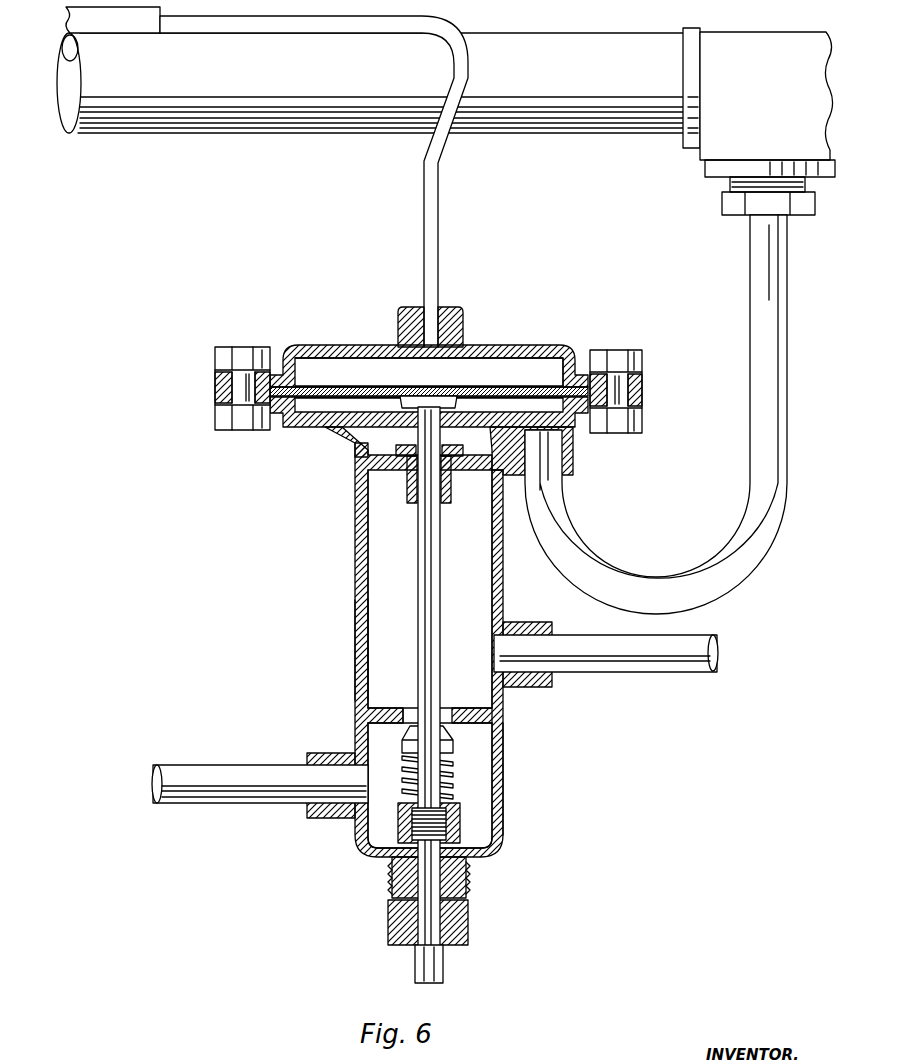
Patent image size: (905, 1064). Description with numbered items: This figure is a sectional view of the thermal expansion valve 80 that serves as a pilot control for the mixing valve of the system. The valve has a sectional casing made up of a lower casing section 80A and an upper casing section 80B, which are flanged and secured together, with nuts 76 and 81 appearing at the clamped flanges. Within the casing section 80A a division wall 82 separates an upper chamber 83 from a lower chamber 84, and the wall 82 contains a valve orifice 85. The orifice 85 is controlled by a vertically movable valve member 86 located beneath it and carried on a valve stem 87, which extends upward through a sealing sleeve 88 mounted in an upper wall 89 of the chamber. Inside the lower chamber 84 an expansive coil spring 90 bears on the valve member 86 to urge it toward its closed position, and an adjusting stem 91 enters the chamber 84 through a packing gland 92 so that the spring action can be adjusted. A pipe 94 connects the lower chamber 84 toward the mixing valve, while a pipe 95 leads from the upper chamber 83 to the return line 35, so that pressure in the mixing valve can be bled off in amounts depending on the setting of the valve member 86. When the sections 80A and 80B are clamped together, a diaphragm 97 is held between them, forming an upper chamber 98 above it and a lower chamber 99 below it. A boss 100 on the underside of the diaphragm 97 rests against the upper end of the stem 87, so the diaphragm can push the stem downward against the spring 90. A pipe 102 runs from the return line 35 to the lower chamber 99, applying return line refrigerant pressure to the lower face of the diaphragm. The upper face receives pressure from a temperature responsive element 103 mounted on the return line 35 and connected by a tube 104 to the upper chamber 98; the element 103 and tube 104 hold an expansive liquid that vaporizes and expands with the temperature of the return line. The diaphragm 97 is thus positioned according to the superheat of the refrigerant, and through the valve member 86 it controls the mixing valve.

The return line 35 is at (320, 128).
The temperature responsive element 103 is at (120, 27).
The tube 104 is at (425, 203).
The pipe 102 is at (760, 467).
The thermal expansion valve 80 is at (355, 592).
The casing section 80A is at (355, 641).
The casing section 80B is at (318, 325).
The nut 76 is at (235, 381).
The nut 81 is at (643, 383).
The diaphragm 97 is at (362, 392).
The upper chamber 98 is at (335, 366).
The lower chamber 99 is at (333, 410).
The boss 100 is at (447, 401).
The upper chamber 83 is at (380, 548).
The lower chamber 84 is at (380, 815).
The valve orifice 85 is at (448, 712).
The valve member 86 is at (400, 735).
The valve stem 87 is at (425, 590).
The sealing sleeve 88 is at (455, 488).
The upper wall 89 is at (392, 466).
The expansive coil spring 90 is at (452, 775).
The adjusting stem 91 is at (446, 910).
The packing gland 92 is at (392, 870).
The division wall 82 is at (480, 727).
The pipe 94 is at (256, 800).
The pipe 95 is at (679, 668).